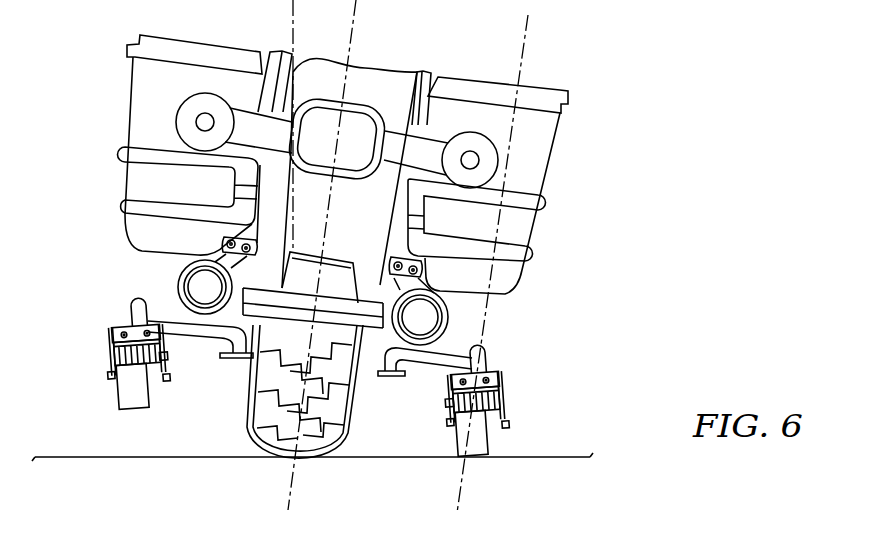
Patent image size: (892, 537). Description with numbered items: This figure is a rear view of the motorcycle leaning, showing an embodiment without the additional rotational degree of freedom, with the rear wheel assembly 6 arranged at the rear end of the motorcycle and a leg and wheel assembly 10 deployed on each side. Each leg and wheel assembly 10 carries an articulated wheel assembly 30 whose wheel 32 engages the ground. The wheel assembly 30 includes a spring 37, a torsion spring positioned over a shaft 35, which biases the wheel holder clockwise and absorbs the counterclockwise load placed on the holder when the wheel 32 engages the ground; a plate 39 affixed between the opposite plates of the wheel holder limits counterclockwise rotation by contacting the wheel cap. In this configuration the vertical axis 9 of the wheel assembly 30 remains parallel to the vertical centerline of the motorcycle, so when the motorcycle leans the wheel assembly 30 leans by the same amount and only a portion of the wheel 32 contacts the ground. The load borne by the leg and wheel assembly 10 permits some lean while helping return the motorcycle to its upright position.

The rear wheel assembly 6 is at (232, 416).
The vertical axis 9 is at (458, 488).
The leg and wheel assembly 10 is at (305, 383).
The articulated wheel assembly 30 is at (94, 374).
The wheel 32 is at (123, 410).
The shaft 35 is at (163, 360).
The spring 37 is at (115, 352).
The plate 39 is at (120, 340).